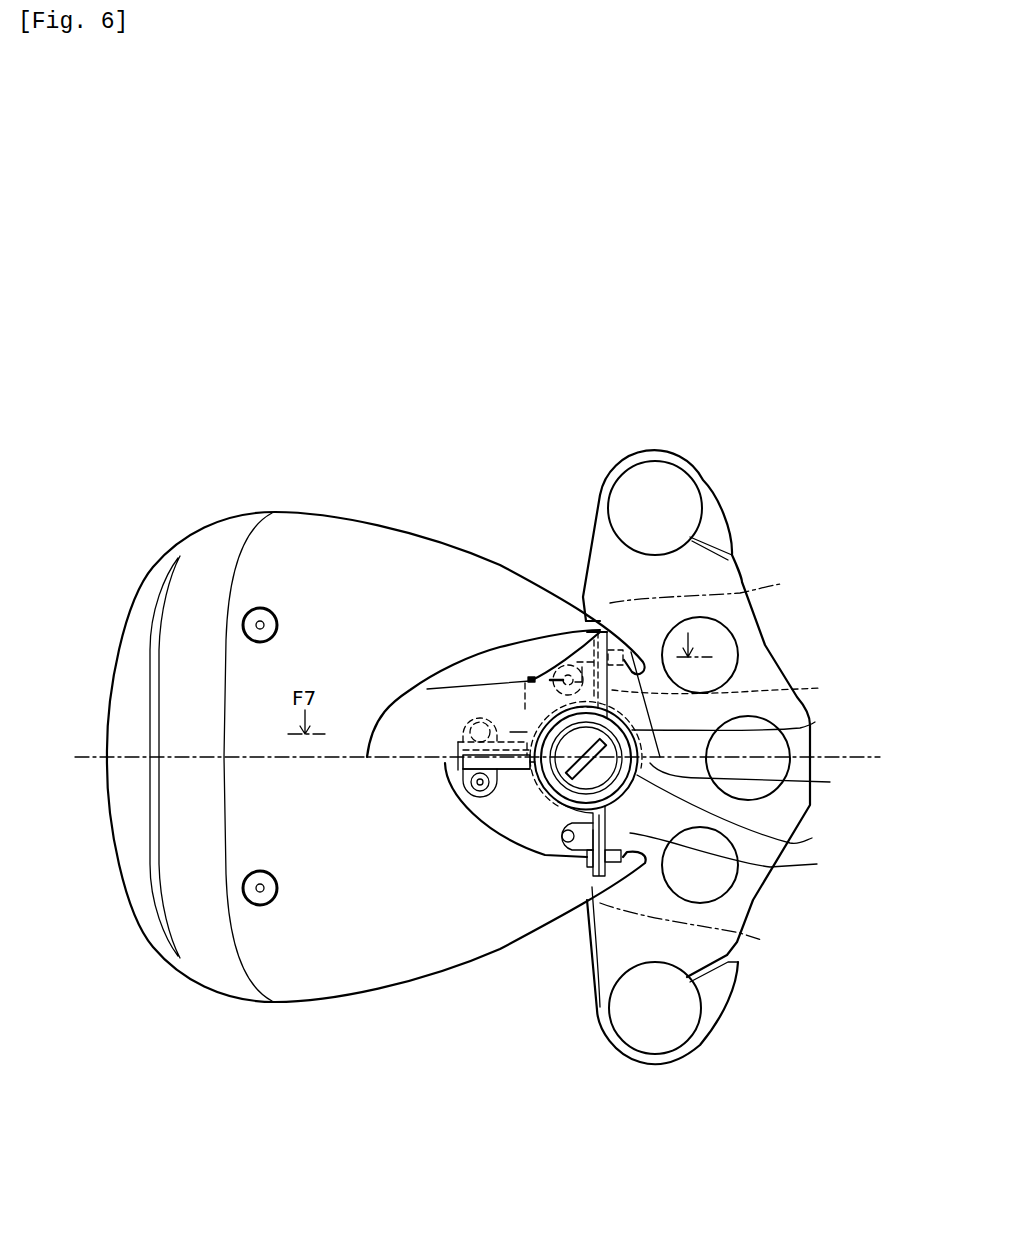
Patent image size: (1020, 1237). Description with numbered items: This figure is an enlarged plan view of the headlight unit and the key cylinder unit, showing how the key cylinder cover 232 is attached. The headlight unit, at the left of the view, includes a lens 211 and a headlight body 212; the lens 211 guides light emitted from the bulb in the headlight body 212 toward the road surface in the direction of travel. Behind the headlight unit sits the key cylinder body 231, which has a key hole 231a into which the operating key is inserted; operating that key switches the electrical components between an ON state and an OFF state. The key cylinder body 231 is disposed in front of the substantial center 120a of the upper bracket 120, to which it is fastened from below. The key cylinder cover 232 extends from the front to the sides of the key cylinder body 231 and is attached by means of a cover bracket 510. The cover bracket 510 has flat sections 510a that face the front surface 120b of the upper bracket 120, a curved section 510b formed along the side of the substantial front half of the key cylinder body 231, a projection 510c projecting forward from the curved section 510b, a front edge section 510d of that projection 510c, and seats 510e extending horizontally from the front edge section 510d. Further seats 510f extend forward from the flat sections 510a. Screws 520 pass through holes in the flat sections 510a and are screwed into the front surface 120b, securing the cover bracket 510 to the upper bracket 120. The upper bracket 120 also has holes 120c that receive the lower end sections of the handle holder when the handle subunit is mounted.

The upper bracket 120 is at (672, 452).
The substantial center of upper bracket 120a is at (766, 758).
The front surface of upper bracket 120b is at (714, 764).
The holes in upper bracket 120c is at (723, 665).
The lens 211 is at (140, 640).
The headlight body 212 is at (323, 543).
The key cylinder body 231 is at (812, 838).
The key hole 231a is at (752, 723).
The key cylinder cover 232 is at (477, 677).
The cover bracket 510 is at (592, 940).
The flat sections 510a is at (742, 778).
The curved section 510b is at (508, 790).
The projection 510c is at (572, 845).
The front edge section 510d is at (456, 763).
The seats 510e is at (483, 722).
The seats 510f is at (578, 640).
The screws 520 is at (580, 640).